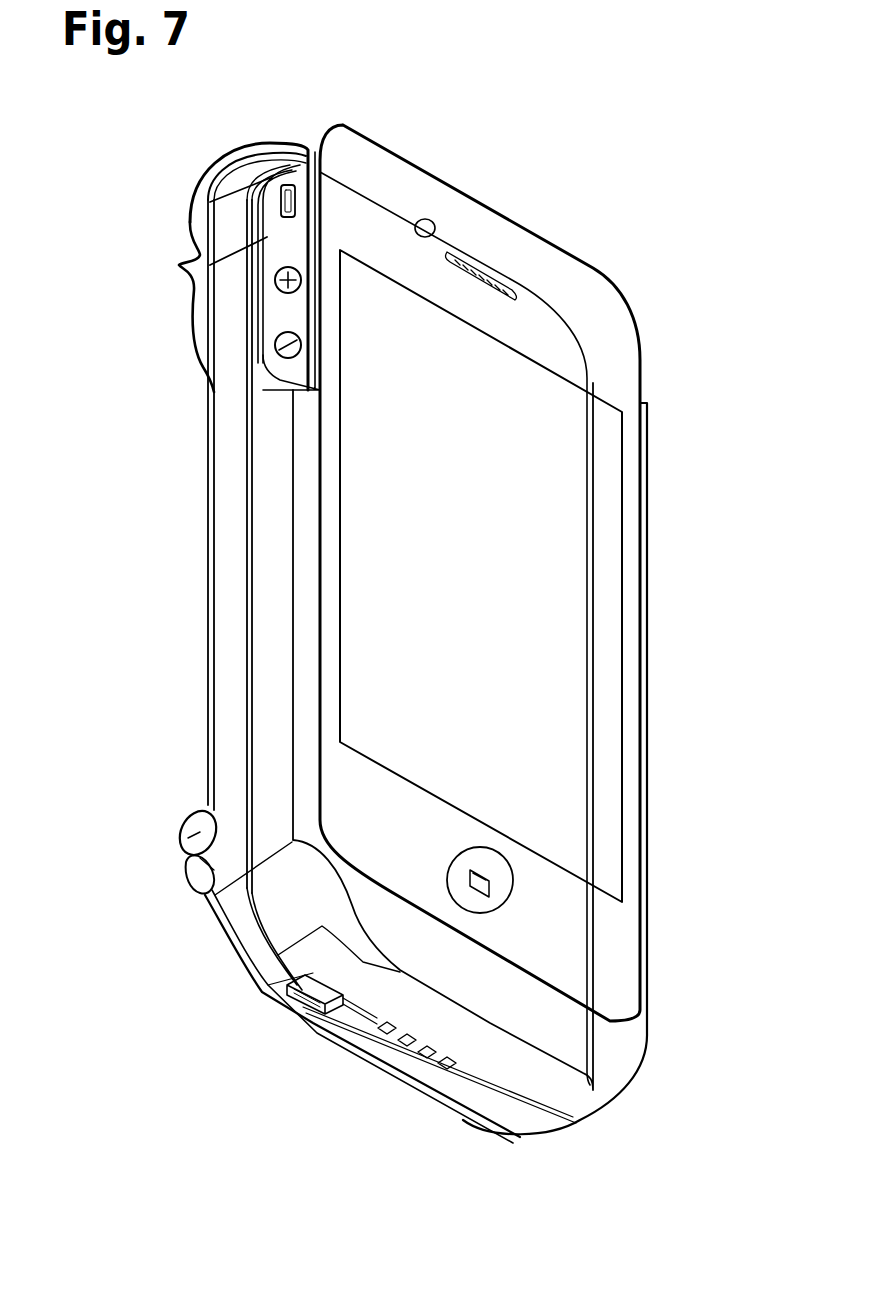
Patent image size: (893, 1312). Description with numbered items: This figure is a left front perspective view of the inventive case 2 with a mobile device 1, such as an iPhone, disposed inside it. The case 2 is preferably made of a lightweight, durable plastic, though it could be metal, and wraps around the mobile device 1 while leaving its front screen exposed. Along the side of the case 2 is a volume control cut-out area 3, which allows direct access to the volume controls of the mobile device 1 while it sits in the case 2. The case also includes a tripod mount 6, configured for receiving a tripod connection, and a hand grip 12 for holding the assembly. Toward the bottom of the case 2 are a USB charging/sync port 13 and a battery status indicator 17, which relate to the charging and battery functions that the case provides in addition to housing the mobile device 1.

The mobile device 1 is at (508, 400).
The case 2 is at (206, 443).
The volume control(s) cut-out area 3 is at (178, 267).
The tripod mount 6 is at (178, 840).
The hand grip 12 is at (180, 820).
The USB charging/sync port 13 is at (288, 1030).
The battery status indicator 17 is at (385, 1034).